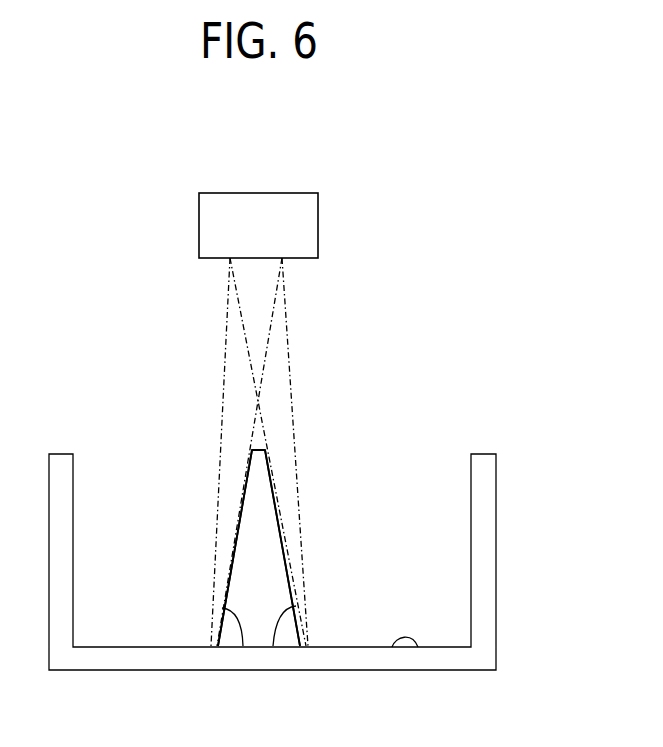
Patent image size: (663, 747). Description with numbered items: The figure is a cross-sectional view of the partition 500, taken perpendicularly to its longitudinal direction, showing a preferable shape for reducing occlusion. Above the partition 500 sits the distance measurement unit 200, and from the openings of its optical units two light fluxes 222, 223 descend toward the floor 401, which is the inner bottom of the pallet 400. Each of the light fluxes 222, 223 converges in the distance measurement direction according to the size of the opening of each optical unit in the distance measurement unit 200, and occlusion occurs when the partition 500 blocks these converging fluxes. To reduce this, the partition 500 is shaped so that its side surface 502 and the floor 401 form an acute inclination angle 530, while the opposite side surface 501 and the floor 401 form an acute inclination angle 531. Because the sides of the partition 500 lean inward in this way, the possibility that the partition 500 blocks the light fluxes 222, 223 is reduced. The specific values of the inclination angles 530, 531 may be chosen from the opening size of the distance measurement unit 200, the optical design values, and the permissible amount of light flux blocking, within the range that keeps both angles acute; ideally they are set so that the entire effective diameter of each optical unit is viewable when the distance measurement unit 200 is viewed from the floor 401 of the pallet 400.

The distance measurement unit 200 is at (208, 221).
The light flux 222 is at (270, 320).
The light flux 223 is at (236, 286).
The partition 500 is at (260, 474).
The right inclined surface of object 501 is at (279, 530).
The side surface of the partition 502 is at (240, 521).
The inclination angle 530 is at (222, 608).
The inclination angle 531 is at (296, 606).
The pallet 400 is at (90, 670).
The floor 401 is at (417, 647).